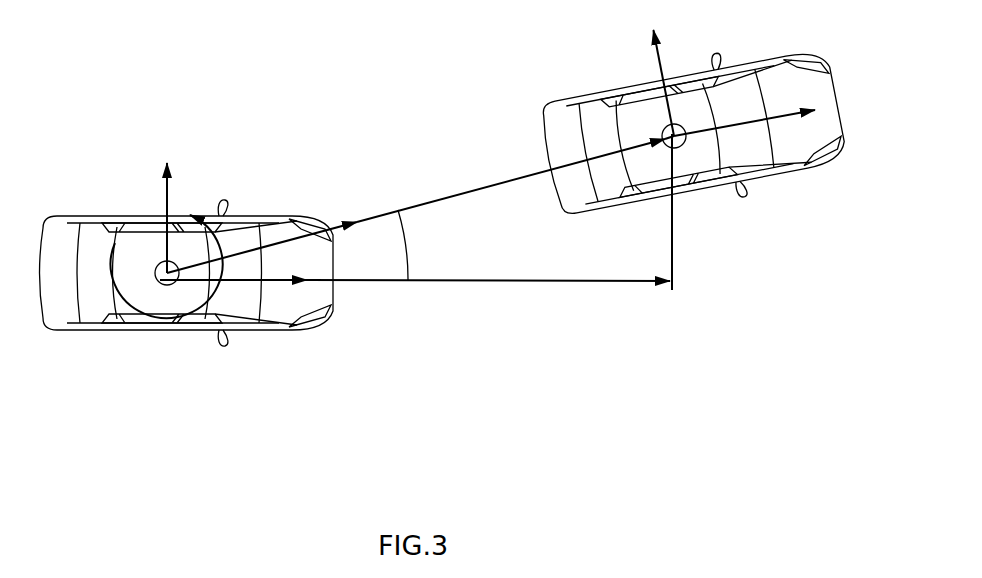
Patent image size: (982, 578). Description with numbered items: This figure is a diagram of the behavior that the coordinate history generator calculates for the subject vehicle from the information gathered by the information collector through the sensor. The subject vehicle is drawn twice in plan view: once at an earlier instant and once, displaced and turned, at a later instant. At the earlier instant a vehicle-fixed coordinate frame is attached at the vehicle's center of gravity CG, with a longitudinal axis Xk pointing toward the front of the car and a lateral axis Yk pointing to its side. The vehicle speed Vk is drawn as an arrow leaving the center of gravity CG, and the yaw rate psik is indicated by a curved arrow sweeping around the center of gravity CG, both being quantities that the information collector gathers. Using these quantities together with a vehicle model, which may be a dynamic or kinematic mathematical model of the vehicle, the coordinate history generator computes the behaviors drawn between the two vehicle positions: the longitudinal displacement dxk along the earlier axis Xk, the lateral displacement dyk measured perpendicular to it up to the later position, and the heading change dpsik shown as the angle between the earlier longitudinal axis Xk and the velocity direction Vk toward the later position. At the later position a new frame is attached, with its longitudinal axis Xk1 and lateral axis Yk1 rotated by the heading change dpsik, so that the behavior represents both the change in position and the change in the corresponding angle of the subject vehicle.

The center of gravity of host vehicle CG is at (131, 264).
The vehicle lateral axis at time k Yk is at (149, 215).
The vehicle longitudinal axis at time k Xk is at (237, 262).
The speed of subject vehicle Vk is at (420, 204).
The yaw rate psik is at (167, 249).
The change in angle dpsik is at (427, 245).
The change in x position dxk is at (488, 296).
The change in y position dyk is at (697, 212).
The vehicle lateral axis at time k+1 Yk1 is at (637, 83).
The vehicle longitudinal axis at time k+1 Xk1 is at (748, 108).